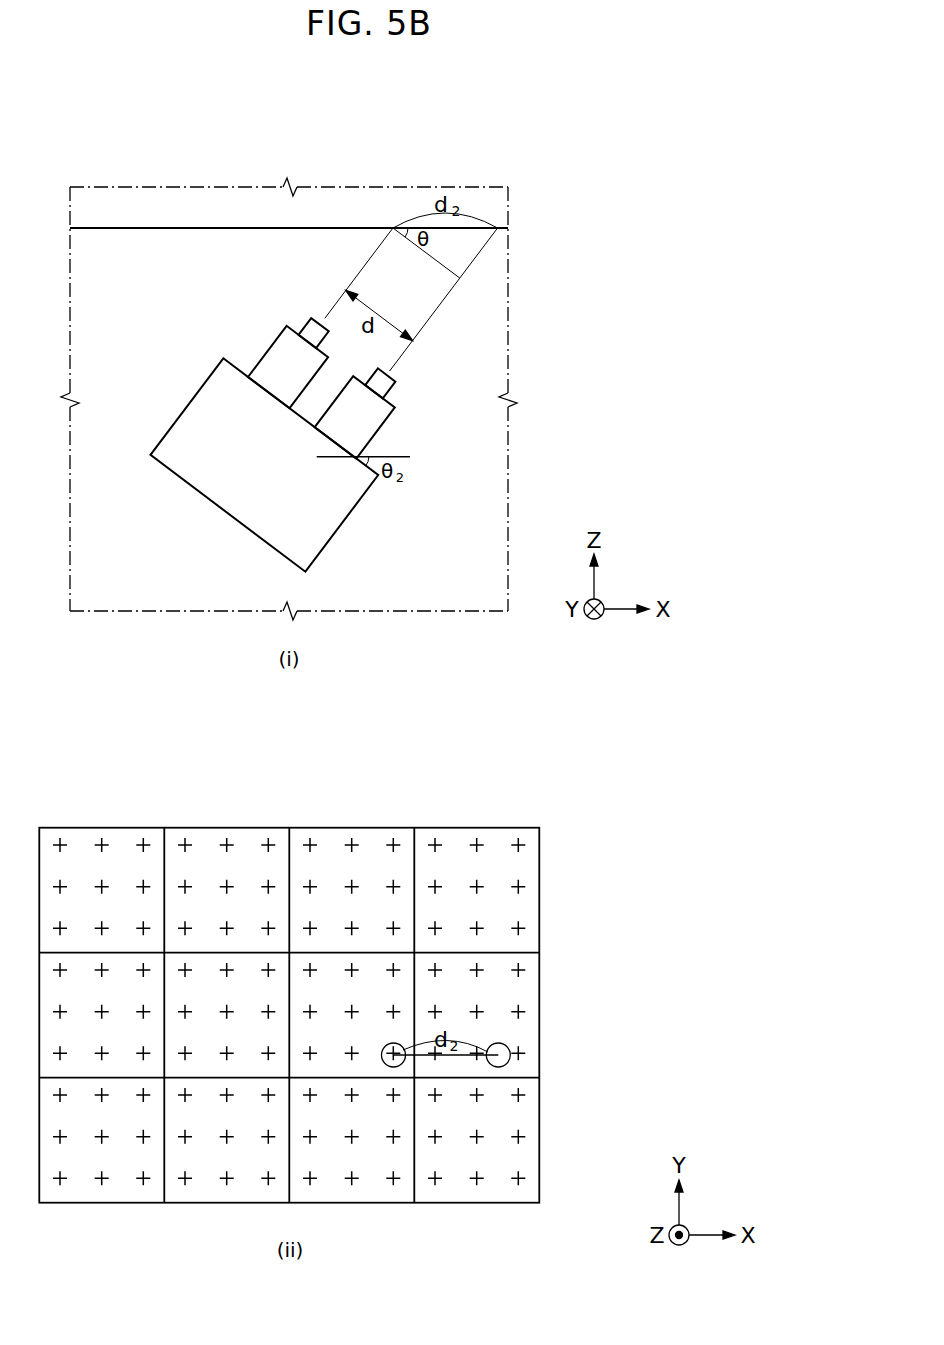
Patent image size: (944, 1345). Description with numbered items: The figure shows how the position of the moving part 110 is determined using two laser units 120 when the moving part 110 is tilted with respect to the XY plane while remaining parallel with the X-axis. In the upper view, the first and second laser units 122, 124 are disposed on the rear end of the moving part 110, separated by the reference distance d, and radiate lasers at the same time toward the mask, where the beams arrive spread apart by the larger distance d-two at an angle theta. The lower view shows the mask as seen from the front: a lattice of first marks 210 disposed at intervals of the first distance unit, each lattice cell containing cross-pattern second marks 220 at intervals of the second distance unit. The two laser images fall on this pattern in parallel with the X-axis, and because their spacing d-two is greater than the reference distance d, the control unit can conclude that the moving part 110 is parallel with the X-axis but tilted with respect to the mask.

The moving part 110 is at (332, 510).
The laser unit 120 is at (271, 460).
The first laser unit 122 is at (286, 378).
The second laser unit 124 is at (343, 422).
The first mark 210 is at (533, 832).
The second mark 220 is at (477, 845).